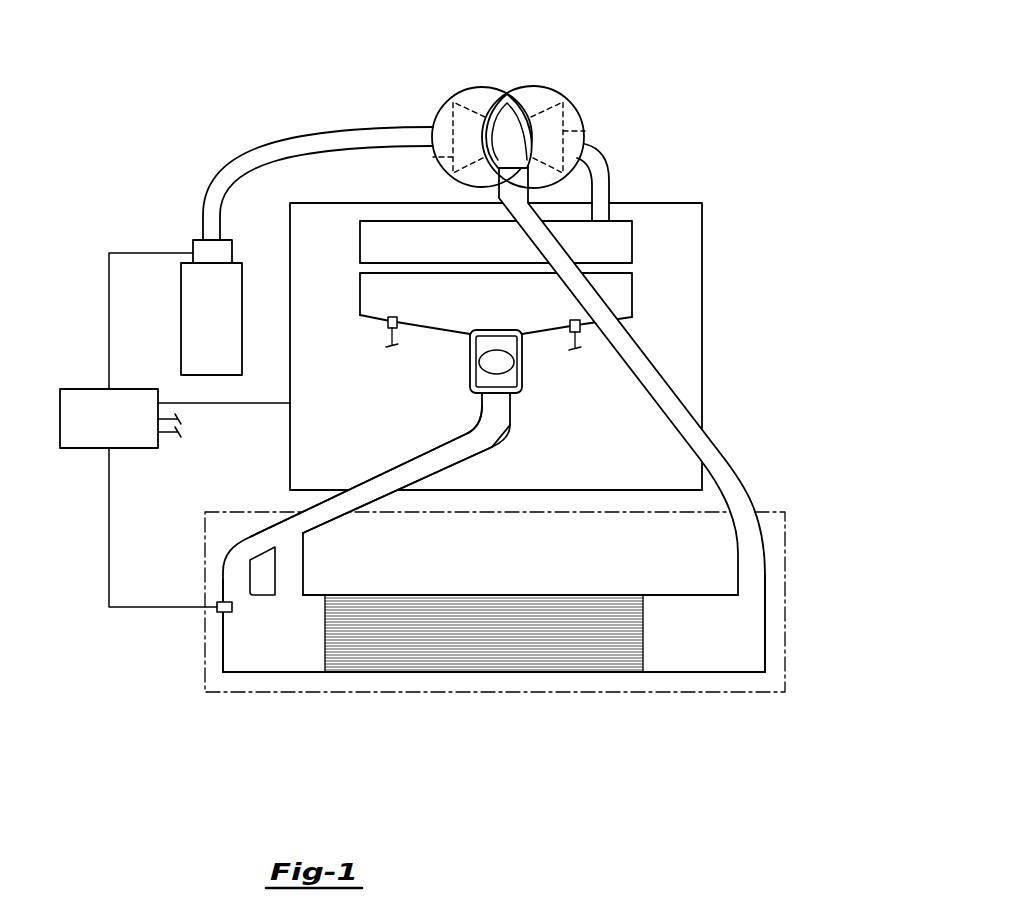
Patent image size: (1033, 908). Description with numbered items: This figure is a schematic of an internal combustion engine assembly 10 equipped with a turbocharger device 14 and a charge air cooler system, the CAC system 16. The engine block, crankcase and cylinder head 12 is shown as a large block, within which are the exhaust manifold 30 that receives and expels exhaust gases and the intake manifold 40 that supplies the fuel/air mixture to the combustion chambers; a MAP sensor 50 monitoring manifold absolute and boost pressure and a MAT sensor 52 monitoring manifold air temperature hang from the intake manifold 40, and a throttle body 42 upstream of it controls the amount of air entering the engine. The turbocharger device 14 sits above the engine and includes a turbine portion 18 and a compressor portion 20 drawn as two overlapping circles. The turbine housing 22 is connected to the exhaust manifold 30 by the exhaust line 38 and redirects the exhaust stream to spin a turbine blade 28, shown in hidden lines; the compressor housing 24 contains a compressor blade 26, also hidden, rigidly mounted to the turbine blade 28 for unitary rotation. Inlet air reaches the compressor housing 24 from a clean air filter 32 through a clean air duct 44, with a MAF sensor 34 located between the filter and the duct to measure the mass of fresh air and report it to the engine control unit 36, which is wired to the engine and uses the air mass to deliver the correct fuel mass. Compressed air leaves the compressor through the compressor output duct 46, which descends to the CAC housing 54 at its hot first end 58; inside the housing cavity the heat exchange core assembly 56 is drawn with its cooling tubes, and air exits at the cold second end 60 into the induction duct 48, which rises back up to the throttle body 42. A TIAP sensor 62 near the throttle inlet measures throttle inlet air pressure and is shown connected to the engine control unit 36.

The internal combustion engine assembly 10 is at (712, 136).
The engine block, crankcase and cylinder head 12 is at (702, 263).
The turbocharger device 14 is at (630, 97).
The CAC system 16 is at (494, 407).
The turbine portion 18 is at (508, 111).
The compressor portion 20 is at (435, 99).
The turbine housing 22 is at (533, 87).
The compressor housing 24 is at (482, 87).
The compressor blade 26 is at (433, 158).
The turbine blade 28 is at (585, 131).
The exhaust manifold 30 is at (632, 242).
The clean air filter 32 is at (181, 318).
The MAF sensor 34 is at (190, 243).
The engine control unit 36 is at (85, 389).
The exhaust line 38 is at (612, 196).
The intake manifold 40 is at (632, 298).
The throttle body 42 is at (468, 378).
The clean air duct 44 is at (303, 142).
The compressor output duct 46 is at (729, 462).
The induction duct 48 is at (337, 520).
The MAP sensor 50 is at (387, 323).
The MAT sensor 52 is at (580, 328).
The CAC housing 54 is at (602, 595).
The heat exchange core assembly 56 is at (478, 612).
The first end 58 is at (765, 644).
The second end 60 is at (223, 665).
The TIAP sensor 62 is at (224, 601).